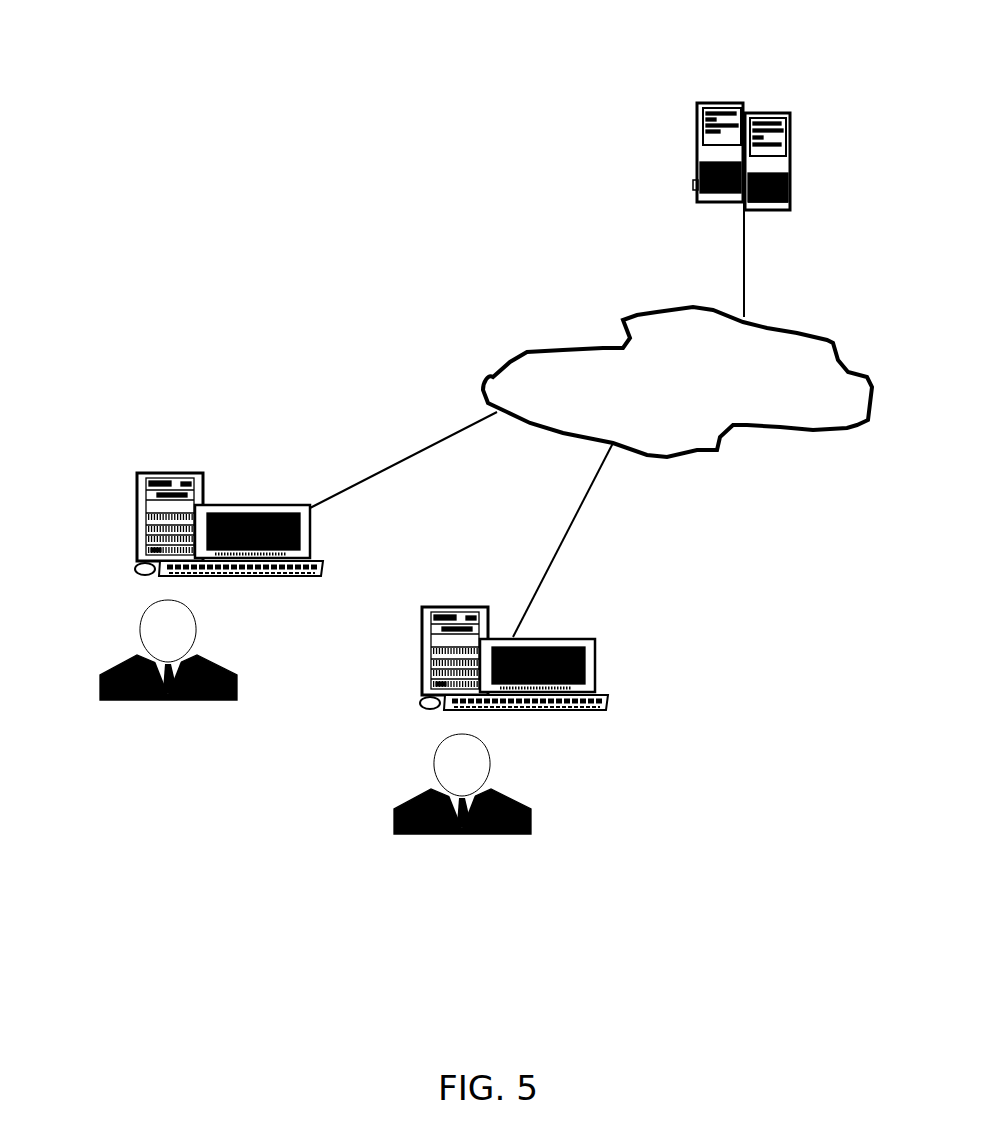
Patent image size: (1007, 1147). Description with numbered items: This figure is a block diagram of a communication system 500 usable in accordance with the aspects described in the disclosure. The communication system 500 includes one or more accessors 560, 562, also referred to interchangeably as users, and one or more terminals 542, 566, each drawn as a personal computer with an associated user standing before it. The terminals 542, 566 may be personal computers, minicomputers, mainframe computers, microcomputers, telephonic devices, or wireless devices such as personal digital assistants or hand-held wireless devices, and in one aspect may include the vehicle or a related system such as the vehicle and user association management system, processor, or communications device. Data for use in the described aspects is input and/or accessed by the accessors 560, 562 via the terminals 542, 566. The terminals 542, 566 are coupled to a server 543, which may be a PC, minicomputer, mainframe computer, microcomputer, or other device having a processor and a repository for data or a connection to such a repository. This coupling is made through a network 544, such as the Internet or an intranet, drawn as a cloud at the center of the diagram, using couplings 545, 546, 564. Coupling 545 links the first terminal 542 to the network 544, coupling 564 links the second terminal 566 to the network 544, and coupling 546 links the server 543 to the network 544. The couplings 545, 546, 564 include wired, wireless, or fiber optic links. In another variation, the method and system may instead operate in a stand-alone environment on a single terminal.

The communication system 500 is at (178, 55).
The terminal 542 is at (170, 472).
The server 543 is at (722, 100).
The network 544 is at (542, 350).
The coupling 545 is at (350, 483).
The coupling 546 is at (745, 280).
The accessor 560 is at (130, 657).
The accessor 562 is at (510, 797).
The coupling 564 is at (583, 500).
The terminal 566 is at (590, 635).